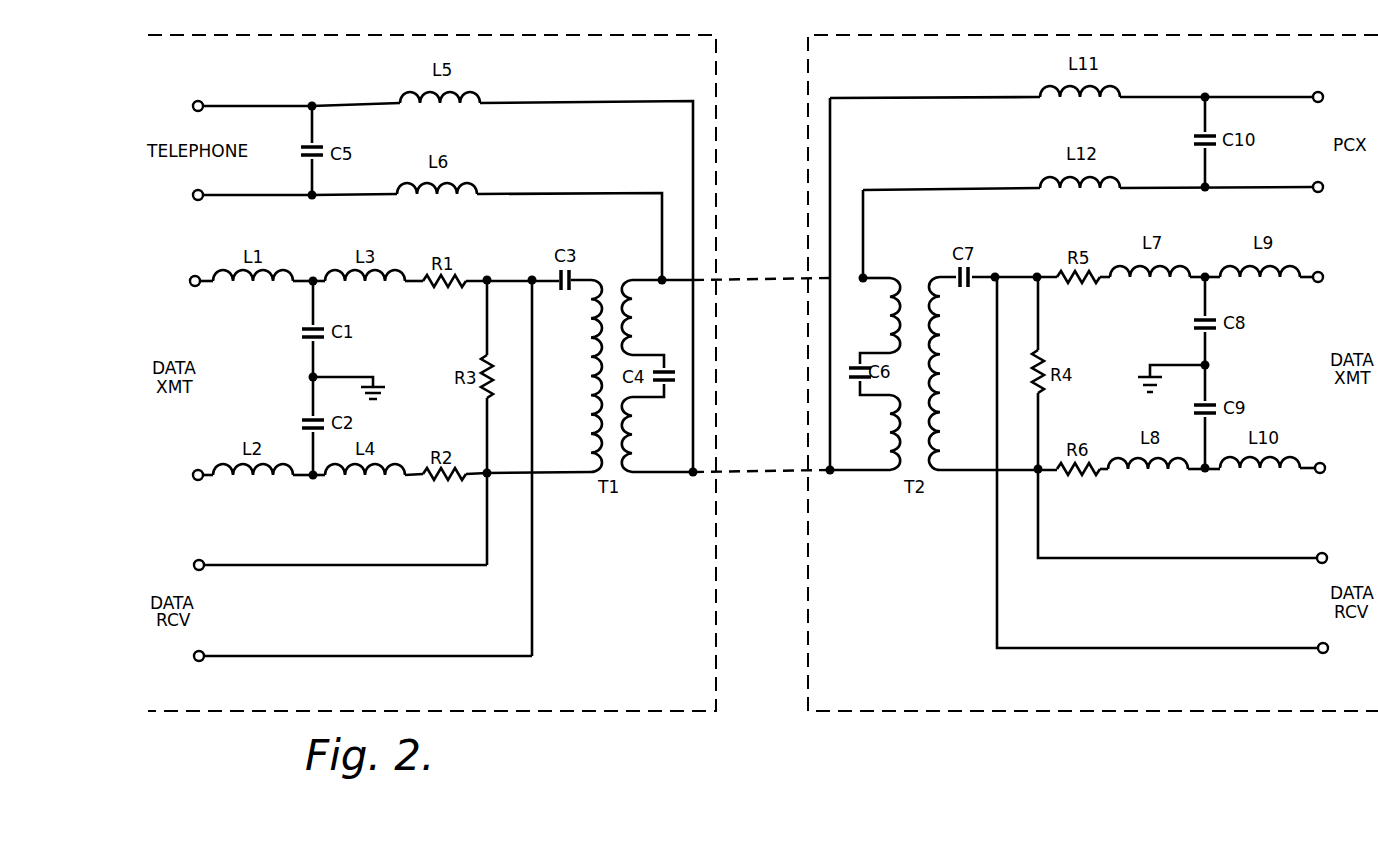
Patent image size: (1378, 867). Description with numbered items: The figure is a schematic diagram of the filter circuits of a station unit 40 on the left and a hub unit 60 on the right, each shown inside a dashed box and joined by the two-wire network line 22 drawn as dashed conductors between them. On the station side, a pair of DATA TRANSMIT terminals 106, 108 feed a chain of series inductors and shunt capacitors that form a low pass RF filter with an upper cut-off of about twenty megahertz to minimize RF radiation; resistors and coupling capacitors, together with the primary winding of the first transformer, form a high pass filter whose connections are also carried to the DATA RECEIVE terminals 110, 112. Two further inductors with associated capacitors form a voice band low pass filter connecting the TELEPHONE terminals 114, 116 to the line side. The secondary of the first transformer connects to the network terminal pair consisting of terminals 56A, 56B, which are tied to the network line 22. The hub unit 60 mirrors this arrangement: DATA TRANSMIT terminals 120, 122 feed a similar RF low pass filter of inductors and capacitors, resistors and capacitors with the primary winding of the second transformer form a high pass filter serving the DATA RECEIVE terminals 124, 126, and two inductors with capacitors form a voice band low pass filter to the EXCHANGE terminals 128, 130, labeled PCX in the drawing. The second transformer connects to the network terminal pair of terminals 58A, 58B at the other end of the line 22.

The station unit 40 is at (716, 78).
The hub unit 60 is at (808, 115).
The network line 22 is at (741, 279).
The network terminal 56A is at (652, 272).
The network terminal 56B is at (668, 476).
The network terminal 58A is at (880, 276).
The network terminal 58B is at (862, 474).
The DATA TRANSMIT terminal 106 is at (199, 287).
The DATA TRANSMIT terminal 108 is at (203, 481).
The DATA RECEIVE terminal 110 is at (204, 560).
The DATA RECEIVE terminal 112 is at (204, 662).
The TELEPHONE terminal 114 is at (204, 101).
The TELEPHONE terminal 116 is at (204, 200).
The DATA TRANSMIT terminal 120 is at (1314, 283).
The DATA TRANSMIT terminal 122 is at (1320, 475).
The DATA RECEIVE terminal 124 is at (1319, 553).
The DATA RECEIVE terminal 126 is at (1320, 653).
The EXCHANGE terminal 128 is at (1312, 94).
The EXCHANGE terminal 130 is at (1314, 193).